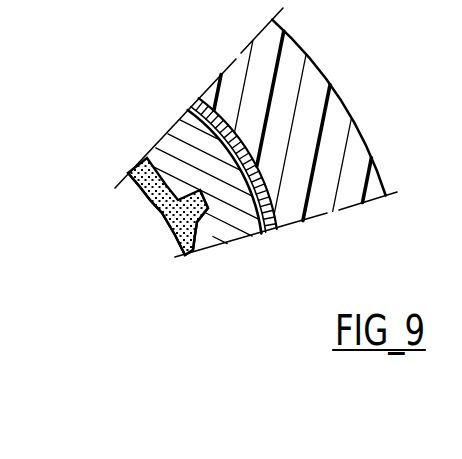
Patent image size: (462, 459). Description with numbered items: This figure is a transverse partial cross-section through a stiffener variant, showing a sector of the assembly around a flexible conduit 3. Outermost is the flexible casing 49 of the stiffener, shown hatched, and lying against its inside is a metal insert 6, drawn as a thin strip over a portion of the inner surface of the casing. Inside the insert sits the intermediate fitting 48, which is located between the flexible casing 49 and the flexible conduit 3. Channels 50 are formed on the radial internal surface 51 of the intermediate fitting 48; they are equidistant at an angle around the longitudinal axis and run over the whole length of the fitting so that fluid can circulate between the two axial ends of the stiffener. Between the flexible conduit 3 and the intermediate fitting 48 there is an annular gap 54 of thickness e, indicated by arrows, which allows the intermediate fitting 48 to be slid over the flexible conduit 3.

The flexible conduit 3 is at (162, 217).
The metal insert 6 is at (269, 232).
The intermediate fitting 48 is at (177, 147).
The flexible casing 49 is at (313, 107).
The channels 50 is at (203, 210).
The radial internal surface 51 is at (200, 244).
The annular gap 54 is at (134, 172).
The annular gap thickness e is at (180, 157).